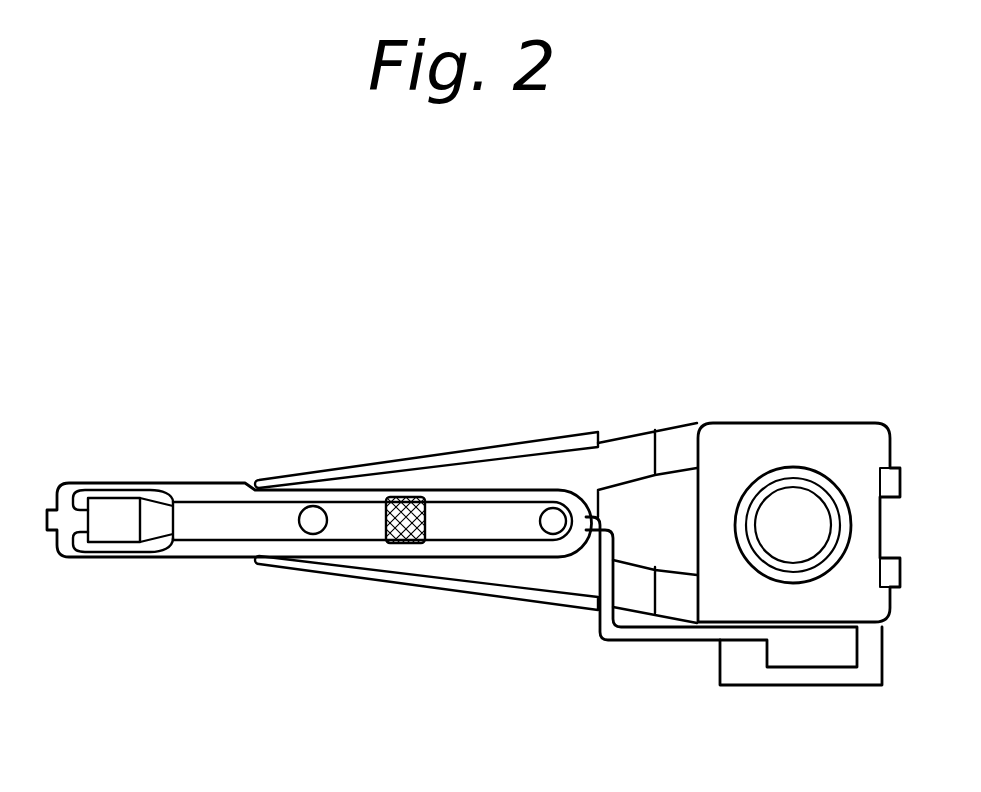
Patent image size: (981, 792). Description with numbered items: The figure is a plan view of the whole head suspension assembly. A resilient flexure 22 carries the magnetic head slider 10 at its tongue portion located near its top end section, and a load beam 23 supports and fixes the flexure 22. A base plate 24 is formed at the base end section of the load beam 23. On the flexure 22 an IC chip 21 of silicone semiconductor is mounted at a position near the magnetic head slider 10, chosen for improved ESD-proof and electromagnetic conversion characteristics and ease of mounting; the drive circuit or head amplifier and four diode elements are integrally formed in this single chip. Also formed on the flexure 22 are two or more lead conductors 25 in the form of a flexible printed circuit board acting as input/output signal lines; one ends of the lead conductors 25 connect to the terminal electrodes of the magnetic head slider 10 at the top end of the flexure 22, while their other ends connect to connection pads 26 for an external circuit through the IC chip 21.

The magnetic head slider 10 is at (111, 526).
The IC chip 21 is at (405, 545).
The resilient flexure 22 is at (247, 527).
The load beam 23 is at (500, 577).
The base plate 24 is at (853, 432).
The lead conductors 25 is at (498, 543).
The connection pads 26 is at (810, 657).